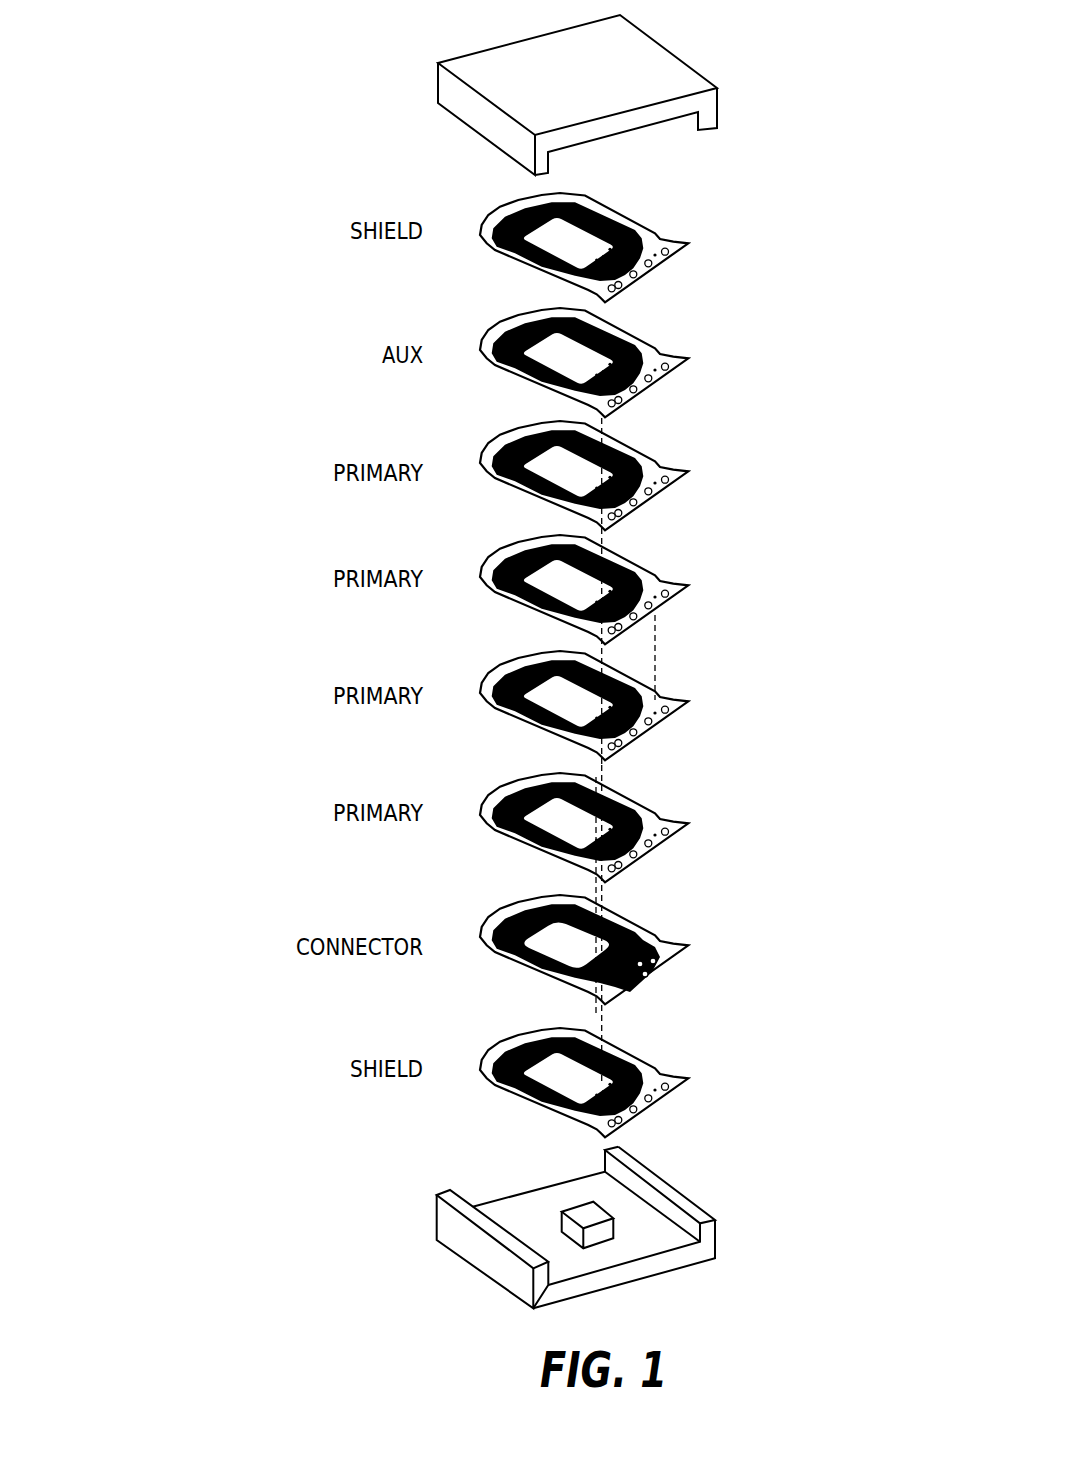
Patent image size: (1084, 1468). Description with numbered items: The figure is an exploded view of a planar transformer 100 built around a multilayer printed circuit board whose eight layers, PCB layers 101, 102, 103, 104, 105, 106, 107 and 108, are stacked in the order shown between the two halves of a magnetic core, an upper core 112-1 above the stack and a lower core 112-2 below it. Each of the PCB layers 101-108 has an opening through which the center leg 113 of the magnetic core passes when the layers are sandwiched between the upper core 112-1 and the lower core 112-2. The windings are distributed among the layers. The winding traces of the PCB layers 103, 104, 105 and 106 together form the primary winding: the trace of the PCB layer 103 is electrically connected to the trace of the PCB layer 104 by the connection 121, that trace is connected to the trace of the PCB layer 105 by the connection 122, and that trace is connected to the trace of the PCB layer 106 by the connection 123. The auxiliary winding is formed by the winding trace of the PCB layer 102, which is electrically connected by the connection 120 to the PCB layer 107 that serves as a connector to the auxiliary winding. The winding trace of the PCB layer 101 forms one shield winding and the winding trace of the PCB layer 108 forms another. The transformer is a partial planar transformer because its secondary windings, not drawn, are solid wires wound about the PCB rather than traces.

The planar transformer 100 is at (284, 75).
The PCB layer 101 is at (673, 235).
The PCB layer 102 is at (673, 350).
The PCB layer 103 is at (673, 463).
The PCB layer 104 is at (673, 577).
The PCB layer 105 is at (673, 693).
The PCB layer 106 is at (673, 815).
The PCB layer 107 is at (673, 937).
The PCB layer 108 is at (673, 1070).
The upper core 112-1 is at (718, 104).
The lower core 112-2 is at (710, 1234).
The center leg 113 is at (600, 1233).
The electrical connection 120 is at (603, 895).
The electrical connection 121 is at (604, 546).
The electrical connection 122 is at (656, 622).
The electrical connection 123 is at (595, 777).